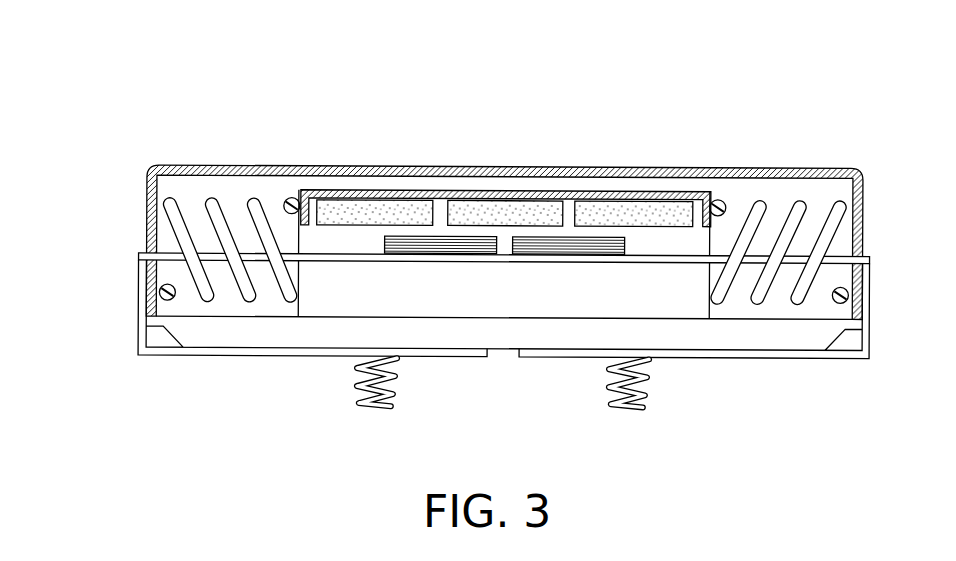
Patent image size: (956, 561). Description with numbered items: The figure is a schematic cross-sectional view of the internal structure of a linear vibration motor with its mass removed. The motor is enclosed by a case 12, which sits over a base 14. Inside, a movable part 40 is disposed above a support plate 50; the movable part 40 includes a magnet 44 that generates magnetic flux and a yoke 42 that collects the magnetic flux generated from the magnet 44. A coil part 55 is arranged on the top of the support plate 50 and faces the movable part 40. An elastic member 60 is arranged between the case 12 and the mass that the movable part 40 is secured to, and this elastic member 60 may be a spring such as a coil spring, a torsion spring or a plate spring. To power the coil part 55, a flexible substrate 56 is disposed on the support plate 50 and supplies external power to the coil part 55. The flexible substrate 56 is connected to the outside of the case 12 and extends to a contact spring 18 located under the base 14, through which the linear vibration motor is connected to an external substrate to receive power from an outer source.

The case 12 is at (270, 167).
The base 14 is at (800, 333).
The contact spring 18 is at (622, 410).
The movable part 40 is at (565, 62).
The yoke 42 is at (433, 193).
The magnet 44 is at (533, 208).
The support plate 50 is at (568, 267).
The coil part 55 is at (447, 240).
The flexible substrate 56 is at (139, 315).
The elastic member 60 is at (802, 208).